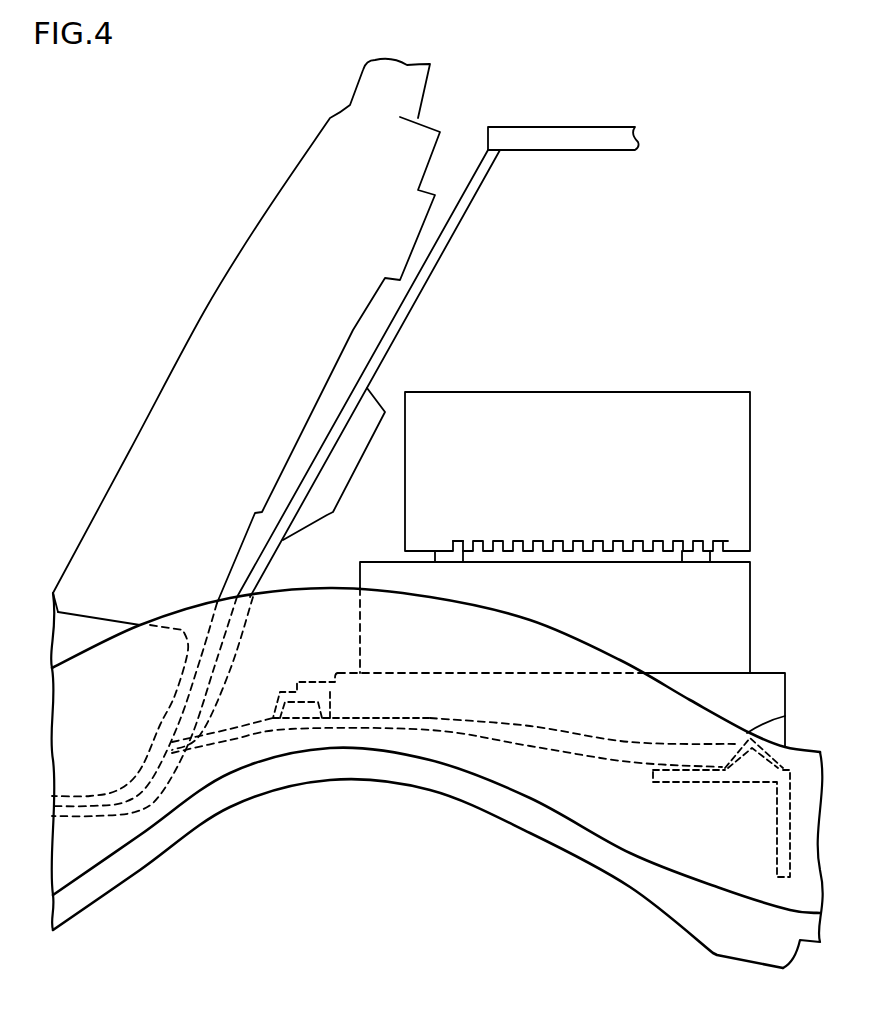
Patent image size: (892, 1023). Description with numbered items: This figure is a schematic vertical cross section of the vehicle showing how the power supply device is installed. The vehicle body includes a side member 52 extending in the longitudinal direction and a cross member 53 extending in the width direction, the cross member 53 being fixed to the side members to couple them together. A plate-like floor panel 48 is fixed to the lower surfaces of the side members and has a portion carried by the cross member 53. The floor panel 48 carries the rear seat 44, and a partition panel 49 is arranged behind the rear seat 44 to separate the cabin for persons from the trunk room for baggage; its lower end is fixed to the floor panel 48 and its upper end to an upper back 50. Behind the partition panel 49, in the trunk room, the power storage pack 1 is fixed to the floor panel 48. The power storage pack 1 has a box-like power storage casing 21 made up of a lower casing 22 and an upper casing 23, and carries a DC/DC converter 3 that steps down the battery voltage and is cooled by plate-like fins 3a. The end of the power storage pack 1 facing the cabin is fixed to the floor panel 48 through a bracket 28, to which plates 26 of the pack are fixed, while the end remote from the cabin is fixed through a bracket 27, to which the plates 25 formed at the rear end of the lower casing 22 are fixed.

The rear seat 44 is at (247, 303).
The partition panel 49 is at (452, 217).
The upper back 50 is at (585, 140).
The DC/DC converter 3 is at (577, 452).
The fins 3a is at (485, 540).
The power storage pack 1 is at (609, 654).
The power storage casing 21 is at (609, 654).
The upper casing 23 is at (728, 622).
The lower casing 22 is at (590, 708).
The plates 25 is at (777, 733).
The cross member 53 is at (785, 835).
The floor panel 48 is at (252, 738).
The bracket 28 is at (283, 710).
The plates 26 is at (327, 685).
The bracket 27 is at (723, 762).
The side member 52 is at (695, 850).